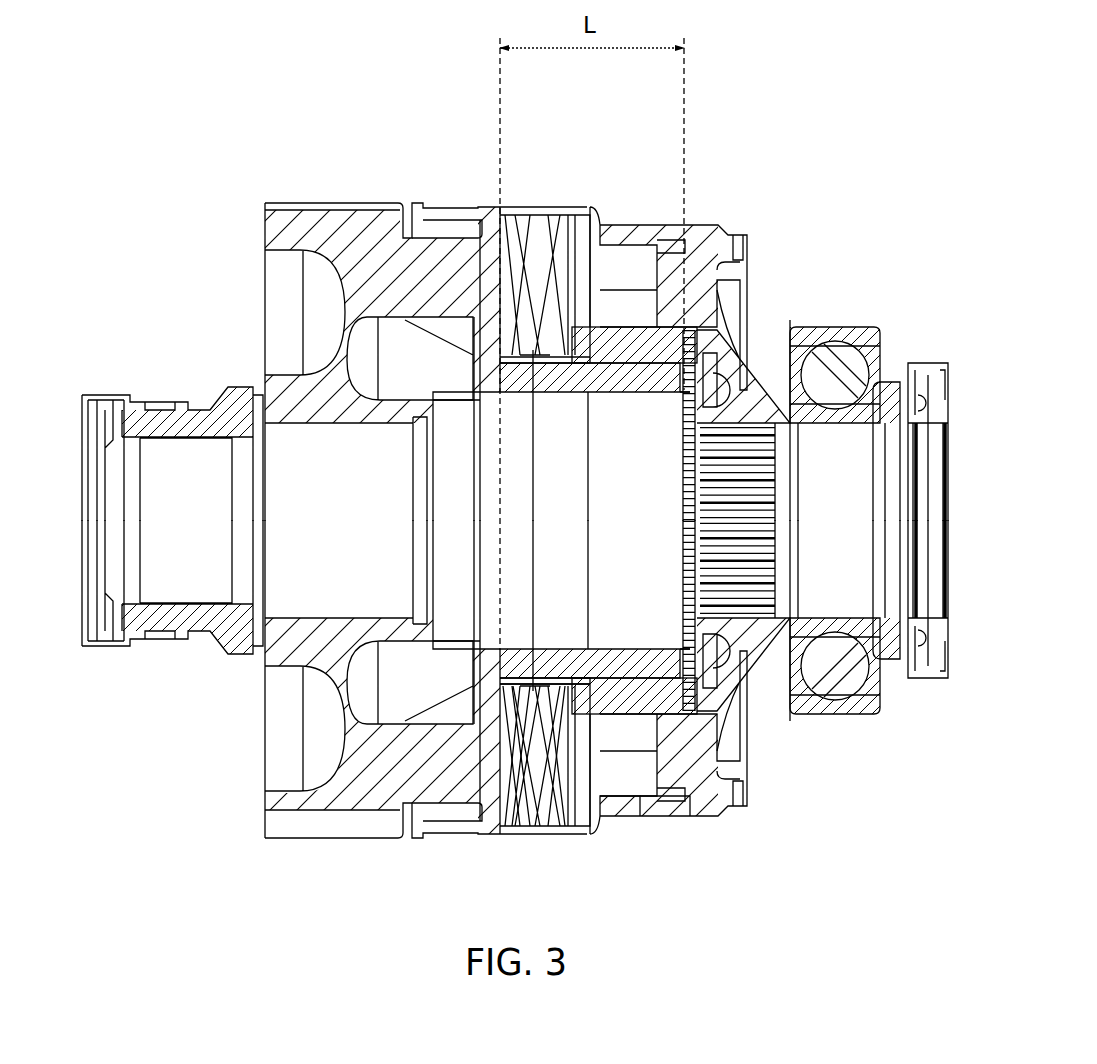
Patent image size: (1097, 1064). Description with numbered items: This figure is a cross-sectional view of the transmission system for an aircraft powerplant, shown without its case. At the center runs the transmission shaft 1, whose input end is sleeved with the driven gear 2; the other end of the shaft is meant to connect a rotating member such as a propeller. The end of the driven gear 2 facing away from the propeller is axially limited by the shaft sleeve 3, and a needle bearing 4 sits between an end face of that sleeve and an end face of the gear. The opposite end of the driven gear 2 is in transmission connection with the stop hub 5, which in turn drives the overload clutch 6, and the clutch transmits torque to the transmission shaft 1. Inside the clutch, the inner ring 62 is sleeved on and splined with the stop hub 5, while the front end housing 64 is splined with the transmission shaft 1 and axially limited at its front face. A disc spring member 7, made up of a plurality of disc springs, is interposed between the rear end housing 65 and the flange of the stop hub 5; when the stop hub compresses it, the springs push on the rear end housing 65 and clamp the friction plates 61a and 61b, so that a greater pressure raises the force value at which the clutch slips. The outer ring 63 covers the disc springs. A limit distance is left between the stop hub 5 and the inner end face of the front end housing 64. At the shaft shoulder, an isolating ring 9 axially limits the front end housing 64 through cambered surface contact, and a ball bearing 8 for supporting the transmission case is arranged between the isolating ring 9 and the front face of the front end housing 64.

The transmission shaft 1 is at (230, 473).
The driven gear 2 is at (340, 240).
The shaft sleeve 3 is at (152, 620).
The needle bearing 4 is at (254, 642).
The stop hub 5 is at (636, 372).
The overload clutch 6 is at (660, 248).
The disc spring member 7 is at (520, 265).
The ball bearing 8 is at (862, 340).
The isolating ring 9 is at (890, 643).
The friction plate 61a is at (612, 775).
The friction plate 61b is at (665, 775).
The inner ring 62 is at (637, 703).
The outer ring 63 is at (560, 812).
The front end housing 64 is at (715, 718).
The rear end housing 65 is at (578, 270).